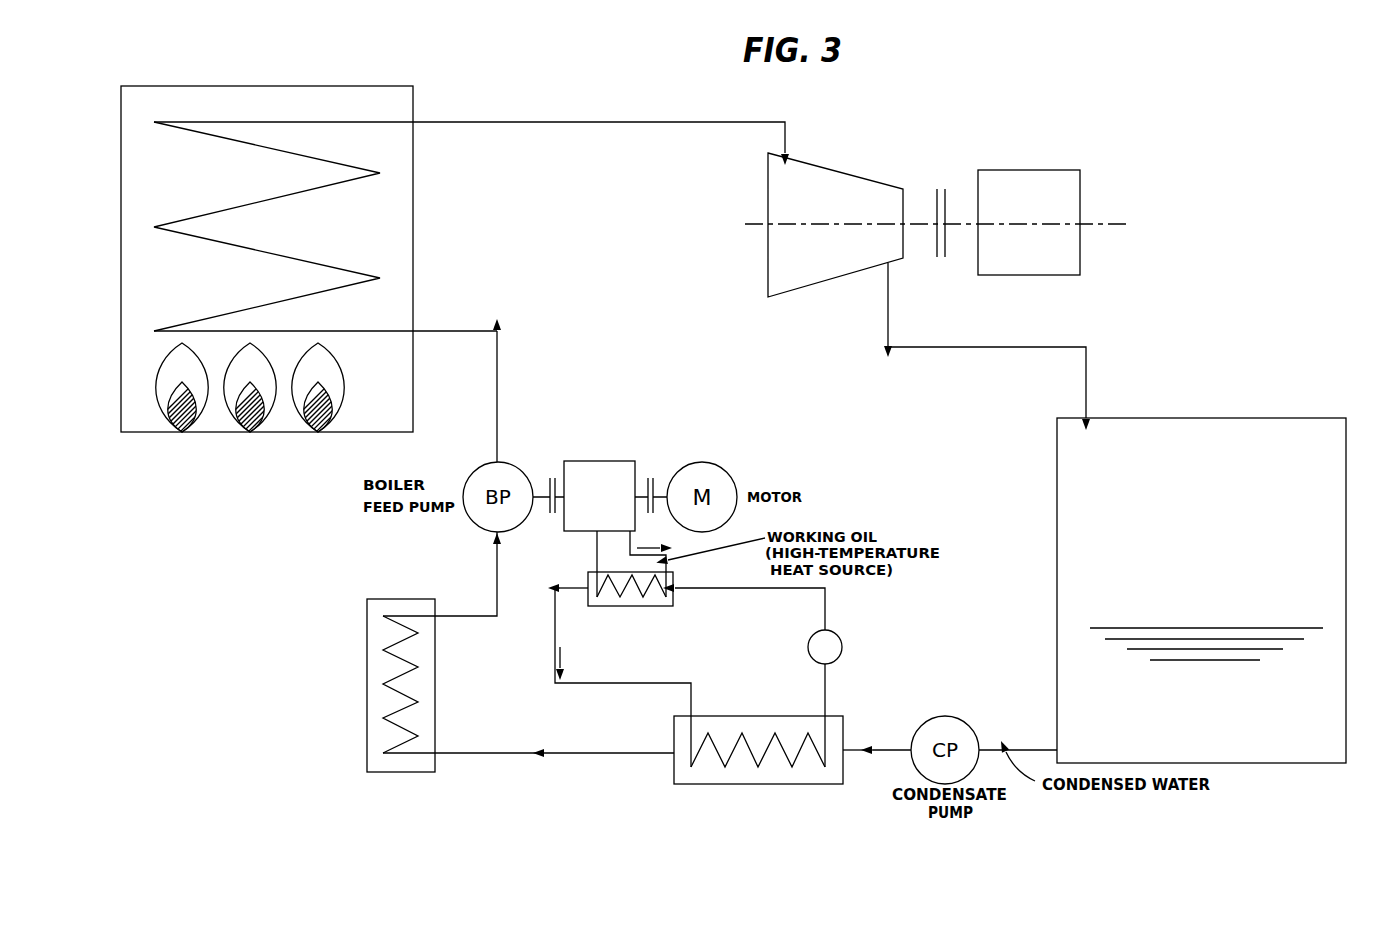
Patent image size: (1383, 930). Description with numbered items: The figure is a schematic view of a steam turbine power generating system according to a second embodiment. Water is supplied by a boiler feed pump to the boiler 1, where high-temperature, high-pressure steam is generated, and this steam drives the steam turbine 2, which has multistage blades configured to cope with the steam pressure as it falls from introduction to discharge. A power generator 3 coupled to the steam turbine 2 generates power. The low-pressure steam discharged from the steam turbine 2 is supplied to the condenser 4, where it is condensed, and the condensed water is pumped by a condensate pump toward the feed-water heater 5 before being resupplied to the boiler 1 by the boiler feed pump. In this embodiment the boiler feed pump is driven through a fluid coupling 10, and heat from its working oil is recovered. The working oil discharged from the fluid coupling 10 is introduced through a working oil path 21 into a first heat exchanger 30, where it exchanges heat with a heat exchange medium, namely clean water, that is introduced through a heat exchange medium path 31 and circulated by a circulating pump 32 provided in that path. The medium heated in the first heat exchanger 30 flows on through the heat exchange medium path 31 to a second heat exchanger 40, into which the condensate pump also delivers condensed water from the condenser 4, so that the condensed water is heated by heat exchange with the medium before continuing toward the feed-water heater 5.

The boiler 1 is at (413, 236).
The steam turbine 2 is at (843, 172).
The power generator 3 is at (1035, 170).
The condenser 4 is at (1245, 418).
The feed-water heater 5 is at (367, 673).
The fluid coupling 10 is at (604, 461).
The working oil path 21 is at (630, 552).
The first heat exchanger 30 is at (673, 578).
The heat exchange medium path 31 is at (620, 683).
The circulating pump 32 is at (842, 647).
The second heat exchanger 40 is at (752, 716).